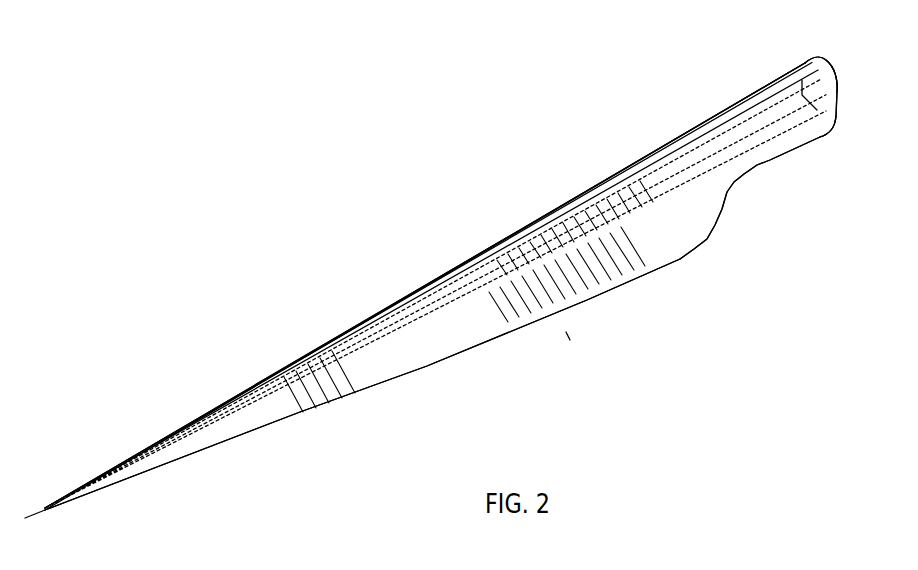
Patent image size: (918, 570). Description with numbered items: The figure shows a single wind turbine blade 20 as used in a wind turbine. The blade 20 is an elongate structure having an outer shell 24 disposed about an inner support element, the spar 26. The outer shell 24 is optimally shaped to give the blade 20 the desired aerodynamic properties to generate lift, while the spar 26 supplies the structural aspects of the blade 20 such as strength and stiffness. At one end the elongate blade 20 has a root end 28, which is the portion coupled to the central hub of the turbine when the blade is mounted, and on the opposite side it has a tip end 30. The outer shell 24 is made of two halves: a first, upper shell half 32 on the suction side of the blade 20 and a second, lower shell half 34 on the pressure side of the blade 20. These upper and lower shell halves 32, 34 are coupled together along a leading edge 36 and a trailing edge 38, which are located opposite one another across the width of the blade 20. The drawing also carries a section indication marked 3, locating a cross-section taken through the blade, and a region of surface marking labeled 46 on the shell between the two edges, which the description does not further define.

The wind turbine blade 20 is at (343, 212).
The outer shell 24 is at (680, 259).
The spar 26 is at (44, 512).
The root end 28 is at (805, 62).
The tip end 30 is at (866, 73).
The upper shell half 32 is at (389, 360).
The lower shell half 34 is at (566, 332).
The leading edge 36 is at (416, 290).
The trailing edge 38 is at (427, 367).
The serrations 46 is at (493, 238).
The section line 3- 3 is at (288, 364).